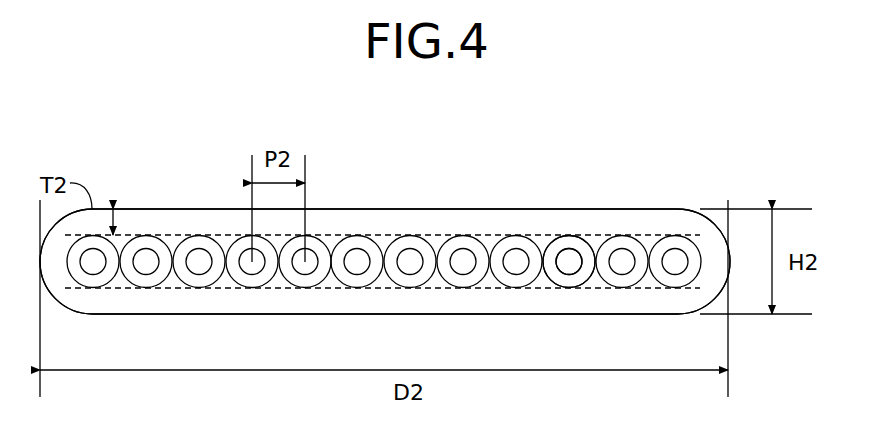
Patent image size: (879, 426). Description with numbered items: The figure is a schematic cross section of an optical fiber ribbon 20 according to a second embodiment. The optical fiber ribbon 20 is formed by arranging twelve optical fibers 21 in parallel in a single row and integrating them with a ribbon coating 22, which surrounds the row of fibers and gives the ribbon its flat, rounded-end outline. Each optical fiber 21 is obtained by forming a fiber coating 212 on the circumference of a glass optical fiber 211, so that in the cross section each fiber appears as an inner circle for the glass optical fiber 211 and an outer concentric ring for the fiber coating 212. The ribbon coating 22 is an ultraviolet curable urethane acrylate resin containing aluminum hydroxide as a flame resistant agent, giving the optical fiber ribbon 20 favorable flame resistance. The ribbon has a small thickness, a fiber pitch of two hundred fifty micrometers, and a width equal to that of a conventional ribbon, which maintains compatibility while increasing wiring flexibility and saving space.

The optical fiber ribbon 20 is at (747, 142).
The optical fiber 21 is at (574, 220).
The ribbon coating 22 is at (508, 210).
The glass optical fiber 211 is at (551, 280).
The fiber coating 212 is at (569, 262).